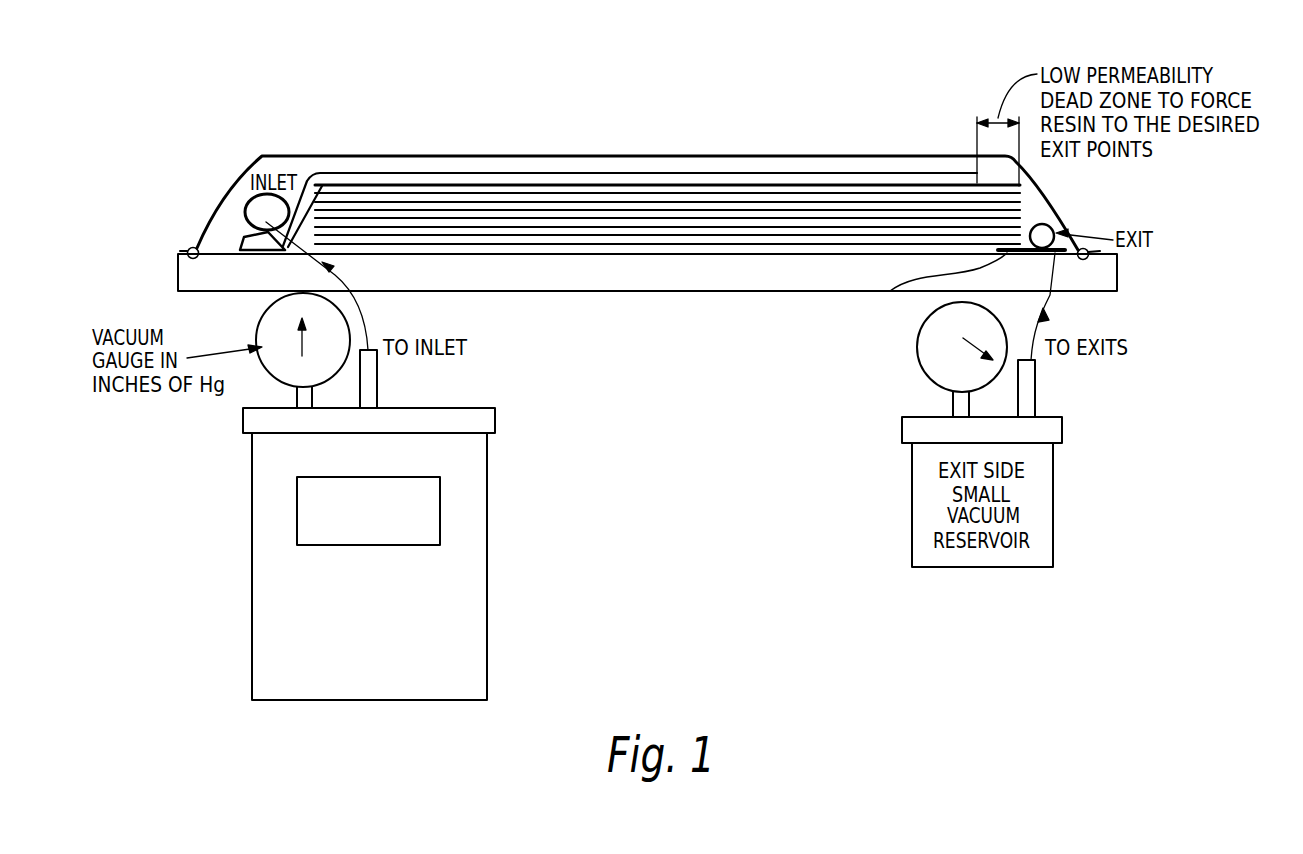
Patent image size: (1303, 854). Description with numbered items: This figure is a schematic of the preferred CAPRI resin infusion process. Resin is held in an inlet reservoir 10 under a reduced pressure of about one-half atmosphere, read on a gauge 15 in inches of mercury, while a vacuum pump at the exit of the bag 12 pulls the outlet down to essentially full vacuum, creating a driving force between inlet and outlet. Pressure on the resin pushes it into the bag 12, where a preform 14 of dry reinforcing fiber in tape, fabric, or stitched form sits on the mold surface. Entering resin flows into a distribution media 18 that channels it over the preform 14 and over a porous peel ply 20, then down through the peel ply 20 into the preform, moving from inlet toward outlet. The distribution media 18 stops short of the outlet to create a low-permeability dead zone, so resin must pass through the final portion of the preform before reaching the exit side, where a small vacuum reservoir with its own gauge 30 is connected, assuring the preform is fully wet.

The inlet reservoir 10 is at (378, 629).
The bag 12 is at (790, 155).
The preform 14 is at (711, 232).
The vacuum gauge 15 is at (303, 350).
The distribution media 18 is at (672, 172).
The porous peel ply 20 is at (910, 188).
The exit side vacuum gauge 30 is at (962, 359).